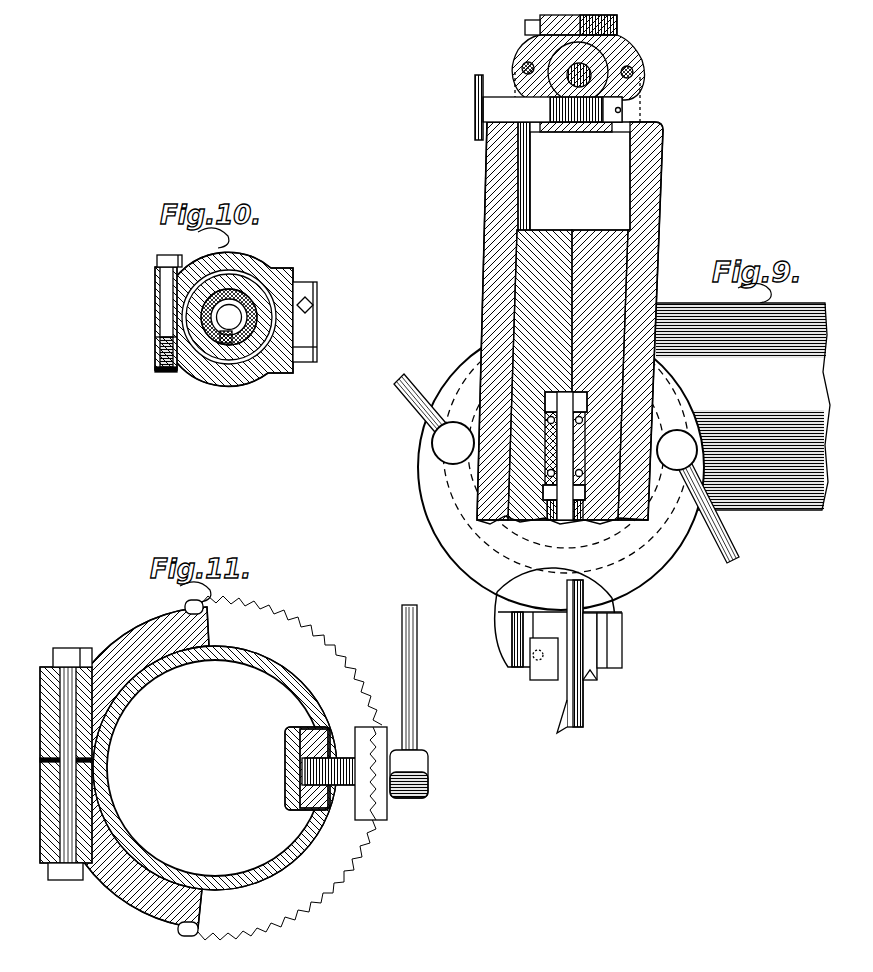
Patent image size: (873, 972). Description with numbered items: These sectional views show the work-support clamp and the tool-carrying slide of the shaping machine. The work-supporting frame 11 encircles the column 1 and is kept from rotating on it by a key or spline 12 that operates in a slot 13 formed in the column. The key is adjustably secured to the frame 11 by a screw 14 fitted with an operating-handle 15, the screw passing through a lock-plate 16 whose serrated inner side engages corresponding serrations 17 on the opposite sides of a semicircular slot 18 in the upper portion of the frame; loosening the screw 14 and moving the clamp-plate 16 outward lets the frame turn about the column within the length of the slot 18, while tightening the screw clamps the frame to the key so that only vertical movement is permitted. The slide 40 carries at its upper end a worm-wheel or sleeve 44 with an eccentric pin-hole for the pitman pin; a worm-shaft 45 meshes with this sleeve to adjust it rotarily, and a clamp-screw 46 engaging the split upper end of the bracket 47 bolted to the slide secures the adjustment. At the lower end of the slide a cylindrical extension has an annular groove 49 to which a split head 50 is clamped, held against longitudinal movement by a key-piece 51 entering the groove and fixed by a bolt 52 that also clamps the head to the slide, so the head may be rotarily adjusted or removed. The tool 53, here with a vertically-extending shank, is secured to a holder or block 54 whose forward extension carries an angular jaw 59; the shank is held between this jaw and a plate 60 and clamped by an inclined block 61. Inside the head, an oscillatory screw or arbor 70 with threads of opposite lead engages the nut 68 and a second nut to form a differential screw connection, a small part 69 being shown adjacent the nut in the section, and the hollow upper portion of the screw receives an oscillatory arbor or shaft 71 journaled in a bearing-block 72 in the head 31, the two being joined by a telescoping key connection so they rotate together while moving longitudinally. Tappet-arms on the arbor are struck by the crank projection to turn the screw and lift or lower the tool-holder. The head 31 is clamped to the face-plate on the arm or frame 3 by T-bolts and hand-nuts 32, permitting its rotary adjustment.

In FIG. 11, the standard or column 1 is at (244, 882).
In FIG. 9, the arm or frame 3 is at (739, 406).
In FIG. 11, the work-supporting frame 11 is at (148, 630).
In FIG. 11, the key or spline 12 is at (303, 815).
In FIG. 11, the slot 13 is at (285, 790).
In FIG. 11, the screw 14 is at (352, 803).
In FIG. 11, the operating-handle 15 is at (418, 738).
In FIG. 11, the lock-plate 16 is at (385, 815).
In FIG. 11, the serrations 17 is at (372, 706).
In FIG. 11, the semicircular slot 18 is at (215, 757).
In FIG. 9, the head 31 is at (583, 377).
In FIG. 9, the hand-nuts 32 is at (566, 468).
In FIG. 9, the slide 40 is at (646, 180).
In FIG. 9, the worm-wheel or sleeve 44 is at (617, 55).
In FIG. 9, the worm-shaft 45 is at (512, 120).
In FIG. 9, the clamp-screw 46 is at (553, 25).
In FIG. 9, the bracket 47 is at (527, 53).
In FIG. 10, the annular groove 49 is at (240, 366).
In FIG. 9, the head 50 is at (512, 612).
In FIG. 10, the head 50 is at (206, 368).
In FIG. 10, the key-piece 51 is at (160, 320).
In FIG. 10, the bolt 52 is at (166, 278).
In FIG. 9, the tool 53 is at (570, 688).
In FIG. 9, the holder or block 54 is at (525, 628).
In FIG. 10, the holder or block 54 is at (305, 352).
In FIG. 10, the angular jaw 59 is at (314, 301).
In FIG. 9, the plate 60 is at (583, 640).
In FIG. 10, the plate 60 is at (307, 318).
In FIG. 9, the inclined block 61 is at (548, 660).
In FIG. 10, the nut 68 is at (229, 319).
In FIG. 10, the key 69 is at (216, 346).
In FIG. 9, the oscillatory screw or arbor 70 is at (597, 541).
In FIG. 9, the oscillatory arbor or shaft 71 is at (565, 456).
In FIG. 9, the bearing-block 72 is at (578, 456).